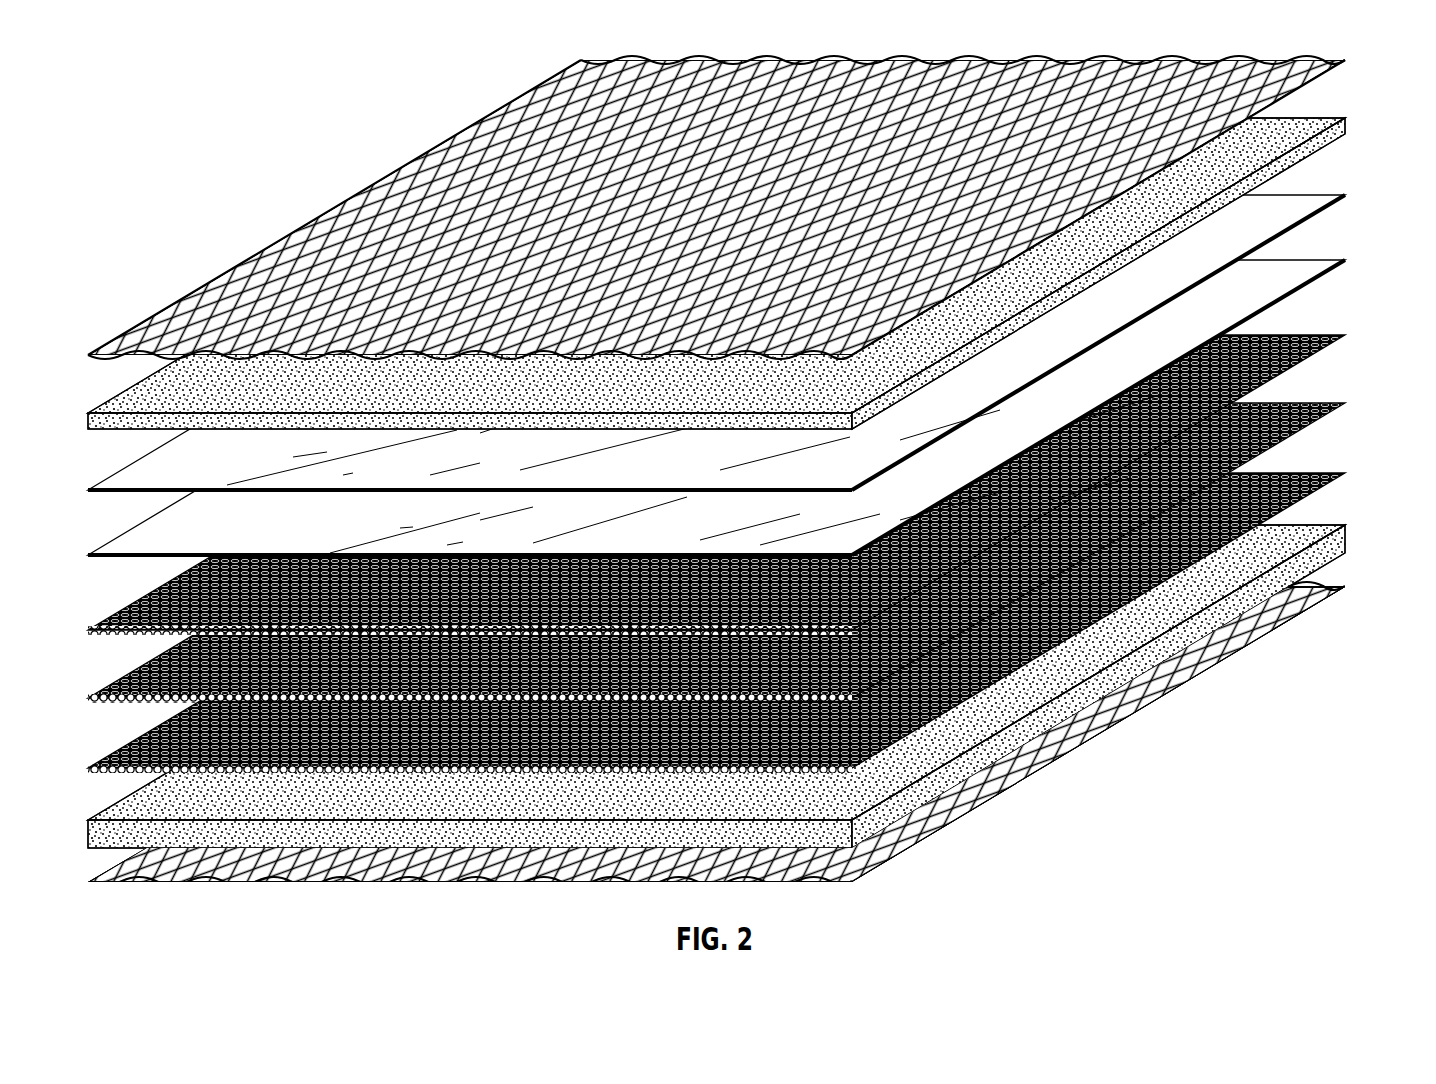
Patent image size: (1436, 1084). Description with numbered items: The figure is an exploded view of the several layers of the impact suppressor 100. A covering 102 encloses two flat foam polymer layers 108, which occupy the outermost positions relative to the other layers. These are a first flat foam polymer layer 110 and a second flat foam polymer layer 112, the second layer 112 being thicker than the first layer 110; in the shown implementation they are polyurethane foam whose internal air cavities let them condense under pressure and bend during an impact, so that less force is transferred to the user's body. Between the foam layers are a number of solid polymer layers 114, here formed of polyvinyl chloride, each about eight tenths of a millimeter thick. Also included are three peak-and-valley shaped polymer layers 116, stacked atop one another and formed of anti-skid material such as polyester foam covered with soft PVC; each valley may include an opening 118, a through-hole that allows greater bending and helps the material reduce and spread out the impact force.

The impact suppressor 100 is at (749, 470).
The covering 102 is at (1333, 82).
The flat foam polymer layers 108 is at (1355, 124).
The first flat foam polymer layer 110 is at (1355, 130).
The second flat foam polymer layer 112 is at (1355, 558).
The solid polymer layers 114 is at (1355, 200).
The peak-and-valley shaped polymer layers 116 is at (1355, 338).
The opening 118 is at (749, 554).